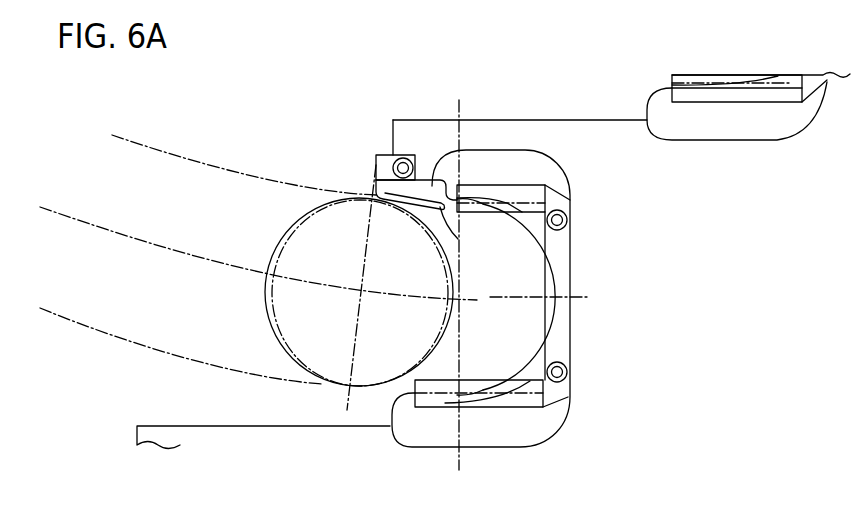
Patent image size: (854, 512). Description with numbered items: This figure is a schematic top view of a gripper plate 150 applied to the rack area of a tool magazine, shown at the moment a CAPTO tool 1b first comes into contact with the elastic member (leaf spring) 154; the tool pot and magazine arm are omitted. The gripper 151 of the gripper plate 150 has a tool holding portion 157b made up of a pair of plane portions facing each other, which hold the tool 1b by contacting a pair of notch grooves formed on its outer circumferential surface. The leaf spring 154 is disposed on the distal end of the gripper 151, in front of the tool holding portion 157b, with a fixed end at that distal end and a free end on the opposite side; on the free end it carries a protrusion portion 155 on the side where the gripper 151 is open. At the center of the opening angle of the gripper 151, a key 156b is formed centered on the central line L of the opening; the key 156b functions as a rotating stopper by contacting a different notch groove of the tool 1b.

The gripper plate 150 is at (698, 197).
The gripper 151 is at (247, 232).
The elastic member (leaf spring) 154 is at (376, 194).
The protrusion portion 155 is at (458, 239).
The key 156b is at (550, 334).
The tool holding portion 157b is at (467, 210).
The CAPTO tool 1b is at (317, 342).
The central line L is at (580, 297).